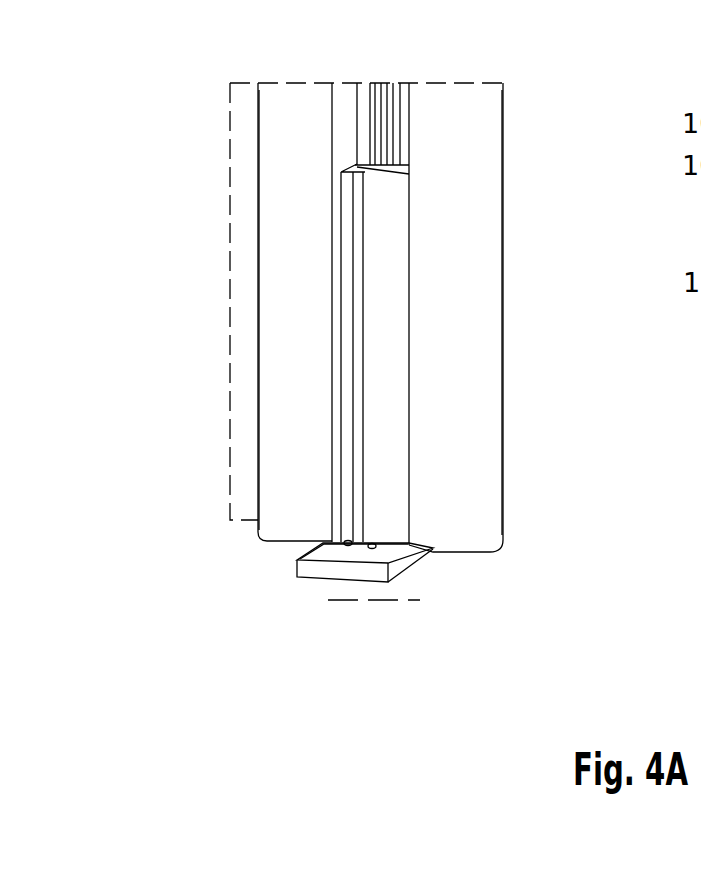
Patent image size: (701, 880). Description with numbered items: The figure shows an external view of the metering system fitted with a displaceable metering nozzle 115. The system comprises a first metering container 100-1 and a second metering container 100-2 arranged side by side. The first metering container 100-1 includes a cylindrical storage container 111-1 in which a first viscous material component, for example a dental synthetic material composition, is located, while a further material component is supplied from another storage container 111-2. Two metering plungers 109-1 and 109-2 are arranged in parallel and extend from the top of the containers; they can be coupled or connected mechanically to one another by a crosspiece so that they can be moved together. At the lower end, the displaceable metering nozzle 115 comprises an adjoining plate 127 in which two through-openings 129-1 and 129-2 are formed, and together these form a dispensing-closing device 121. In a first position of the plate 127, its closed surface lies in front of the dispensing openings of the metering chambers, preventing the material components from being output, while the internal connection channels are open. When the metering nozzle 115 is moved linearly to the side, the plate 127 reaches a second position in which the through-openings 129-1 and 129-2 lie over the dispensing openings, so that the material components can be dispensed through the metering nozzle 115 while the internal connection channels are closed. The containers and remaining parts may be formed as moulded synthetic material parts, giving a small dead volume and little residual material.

The first metering container 100-1 is at (522, 456).
The second metering container 100-2 is at (212, 226).
The first metering plunger 109-1 is at (392, 122).
The second metering plunger 109-2 is at (362, 138).
The cylindrical storage container 111-1 is at (447, 313).
The storage container 111-2 is at (287, 350).
The displaceable metering nozzle 115 is at (387, 590).
The dispensing-closing device 121 is at (432, 571).
The adjoining plate 127 is at (322, 548).
The first through-opening 129-1 is at (372, 549).
The second through-opening 129-2 is at (348, 547).